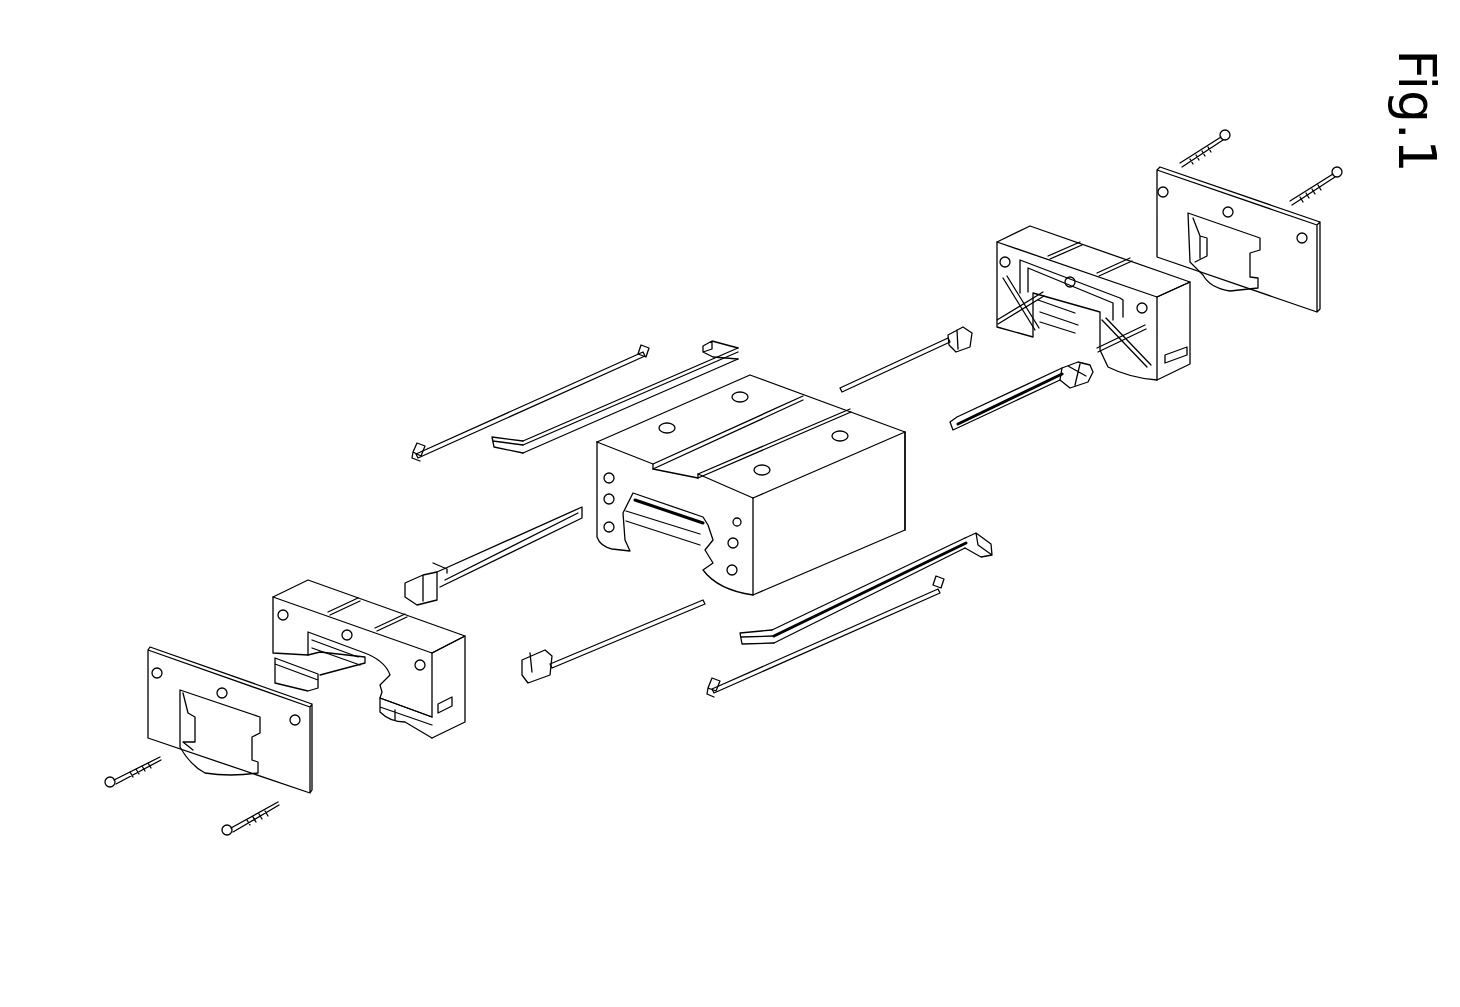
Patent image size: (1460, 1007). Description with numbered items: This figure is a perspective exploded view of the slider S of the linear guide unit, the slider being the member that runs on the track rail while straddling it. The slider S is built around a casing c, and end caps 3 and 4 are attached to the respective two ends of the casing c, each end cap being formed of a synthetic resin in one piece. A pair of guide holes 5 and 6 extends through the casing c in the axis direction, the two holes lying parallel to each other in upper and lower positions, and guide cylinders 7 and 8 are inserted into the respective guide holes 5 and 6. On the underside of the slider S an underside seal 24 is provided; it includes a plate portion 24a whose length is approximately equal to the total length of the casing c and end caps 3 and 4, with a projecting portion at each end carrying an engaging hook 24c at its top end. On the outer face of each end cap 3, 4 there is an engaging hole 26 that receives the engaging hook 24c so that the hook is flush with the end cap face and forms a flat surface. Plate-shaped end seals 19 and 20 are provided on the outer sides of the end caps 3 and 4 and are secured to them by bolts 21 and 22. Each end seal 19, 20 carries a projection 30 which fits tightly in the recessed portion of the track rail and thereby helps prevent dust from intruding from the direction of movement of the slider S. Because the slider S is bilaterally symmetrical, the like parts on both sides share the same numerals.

The slider S is at (781, 370).
The casing c is at (907, 489).
The end cap 3 is at (323, 594).
The end cap 4 is at (1045, 237).
The guide hole 5 is at (603, 497).
The guide hole 6 is at (607, 534).
The guide cylinder 7 is at (485, 545).
The guide cylinder 8 is at (896, 363).
The end seal 19 is at (300, 769).
The end seal 20 is at (1160, 225).
The bolt 21 is at (132, 765).
The bolt 22 is at (1190, 155).
The underside seal 24 is at (508, 412).
The plate portion 24a is at (577, 382).
The engaging hook 24c is at (422, 443).
The engaging hole 26 is at (272, 674).
The projection 30 is at (250, 773).